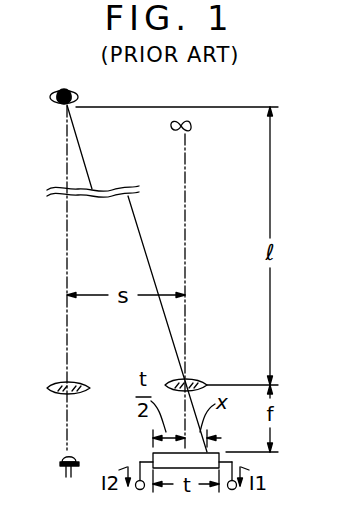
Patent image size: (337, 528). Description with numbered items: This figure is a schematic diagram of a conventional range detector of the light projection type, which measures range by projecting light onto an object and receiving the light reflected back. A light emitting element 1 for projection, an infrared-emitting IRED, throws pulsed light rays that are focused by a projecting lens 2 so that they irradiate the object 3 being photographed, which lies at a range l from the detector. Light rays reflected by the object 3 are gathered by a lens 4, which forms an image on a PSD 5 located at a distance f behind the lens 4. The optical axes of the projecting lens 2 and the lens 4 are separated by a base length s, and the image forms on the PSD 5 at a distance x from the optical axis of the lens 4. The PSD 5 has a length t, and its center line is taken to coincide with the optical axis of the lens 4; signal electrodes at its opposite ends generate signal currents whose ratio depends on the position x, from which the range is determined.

The light emitting element 1 is at (61, 459).
The projecting lens 2 is at (57, 388).
The object 3 is at (50, 98).
The lens 4 is at (190, 380).
The PSD 5 is at (155, 455).